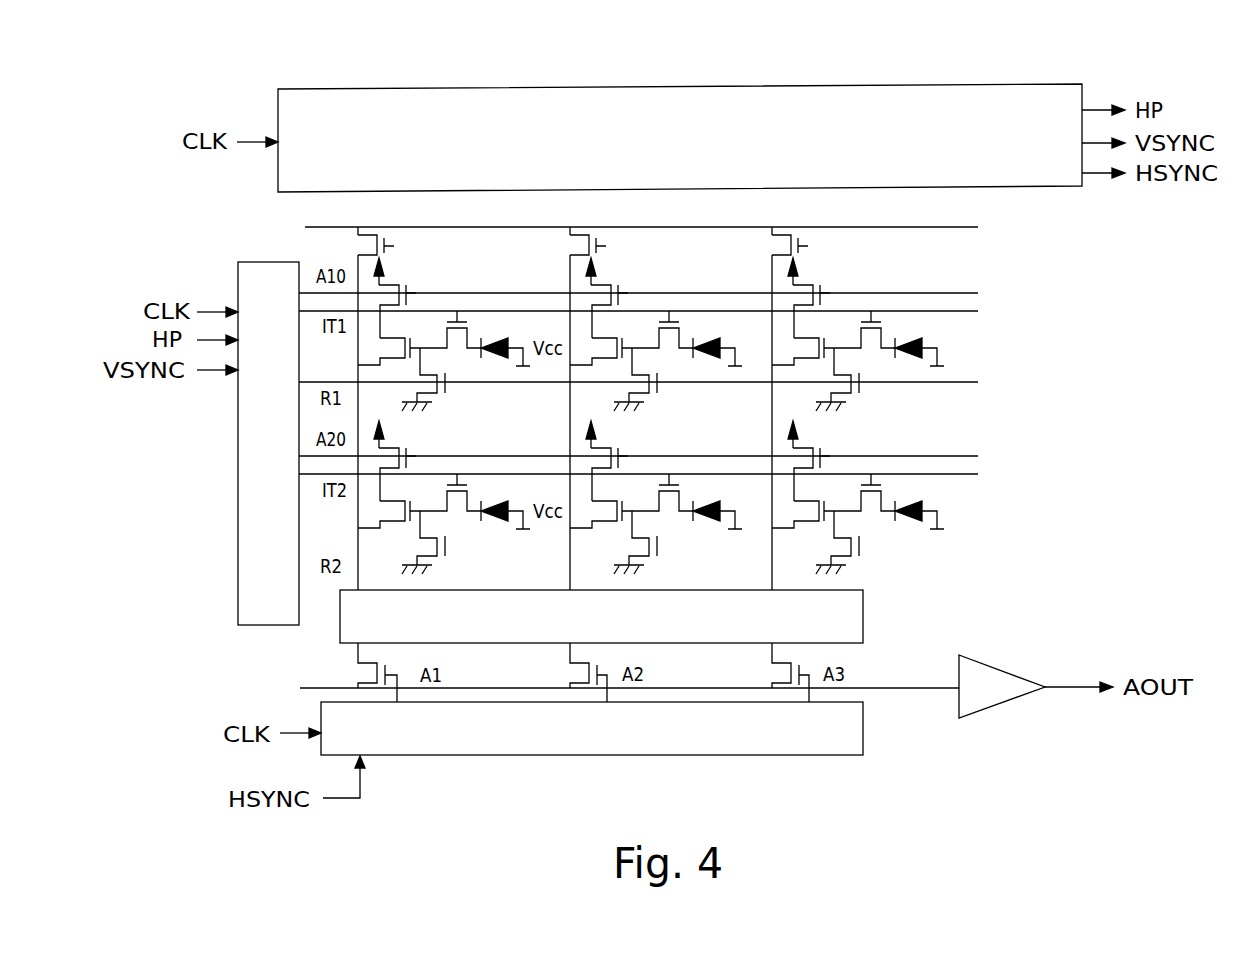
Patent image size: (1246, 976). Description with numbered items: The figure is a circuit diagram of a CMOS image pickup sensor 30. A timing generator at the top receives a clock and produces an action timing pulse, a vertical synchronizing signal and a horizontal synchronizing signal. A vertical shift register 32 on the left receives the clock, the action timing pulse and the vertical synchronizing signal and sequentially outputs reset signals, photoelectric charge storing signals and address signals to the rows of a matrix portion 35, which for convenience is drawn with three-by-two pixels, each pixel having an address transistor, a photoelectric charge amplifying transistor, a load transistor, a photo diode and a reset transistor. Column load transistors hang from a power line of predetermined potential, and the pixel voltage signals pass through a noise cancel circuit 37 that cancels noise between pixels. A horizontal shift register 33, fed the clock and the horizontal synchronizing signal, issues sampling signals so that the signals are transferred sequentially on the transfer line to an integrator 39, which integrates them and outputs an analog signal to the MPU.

The CMOS image pickup sensor 30 is at (226, 90).
The vertical shift register 32 is at (357, 88).
The horizontal shift register 33 is at (600, 757).
The matrix portion 35 is at (1033, 376).
The noise cancel circuit 37 is at (863, 612).
The integrator 39 is at (1015, 675).